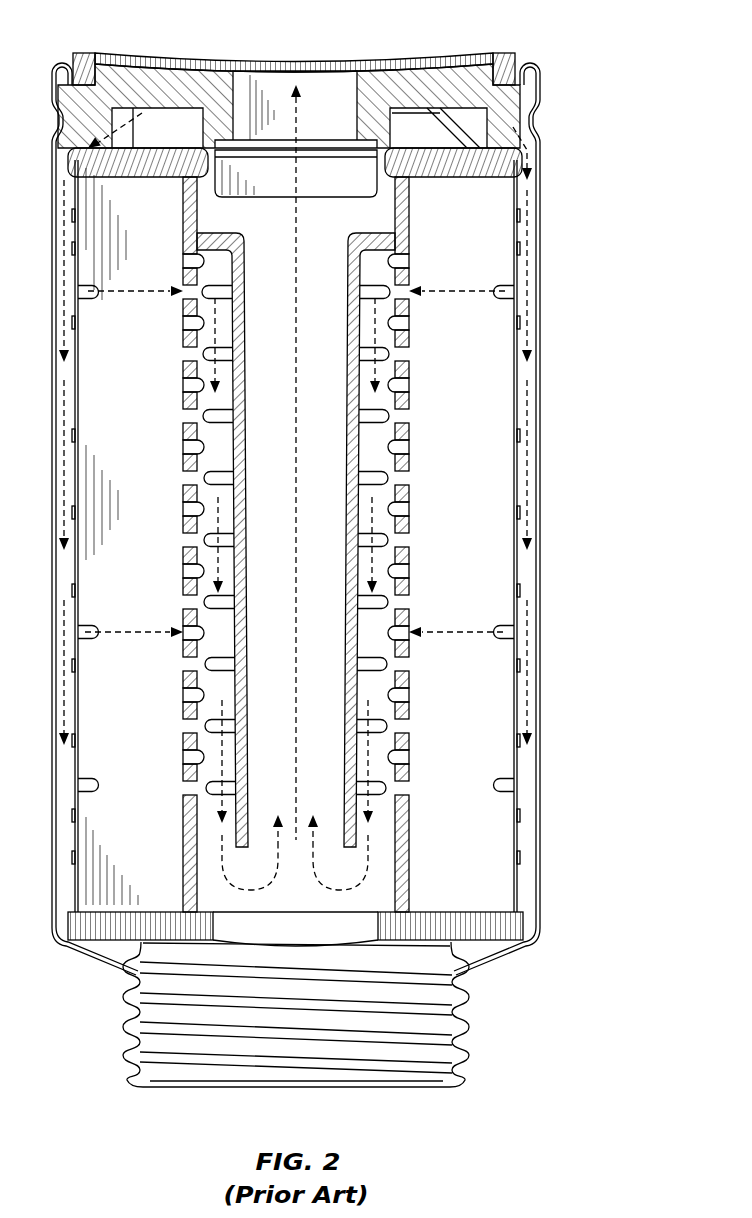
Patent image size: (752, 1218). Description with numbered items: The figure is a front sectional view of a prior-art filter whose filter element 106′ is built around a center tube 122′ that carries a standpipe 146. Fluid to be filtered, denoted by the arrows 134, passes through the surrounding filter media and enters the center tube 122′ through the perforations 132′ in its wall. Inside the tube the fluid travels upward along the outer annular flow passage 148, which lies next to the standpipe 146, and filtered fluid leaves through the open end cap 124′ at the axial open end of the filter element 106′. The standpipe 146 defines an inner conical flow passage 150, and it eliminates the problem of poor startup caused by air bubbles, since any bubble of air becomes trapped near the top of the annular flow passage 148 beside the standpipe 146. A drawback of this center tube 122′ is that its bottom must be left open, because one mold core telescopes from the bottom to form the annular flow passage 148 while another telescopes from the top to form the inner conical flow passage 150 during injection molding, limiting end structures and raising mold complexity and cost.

The filter element 106′ is at (516, 604).
The center tube 122′ is at (414, 224).
The open end cap 124′ is at (428, 178).
The perforations 132′ is at (191, 294).
The arrows 134 is at (120, 125).
The standpipe 146 is at (358, 430).
The annular flow passage 148 is at (207, 497).
The inner conical flow passage 150 is at (326, 817).